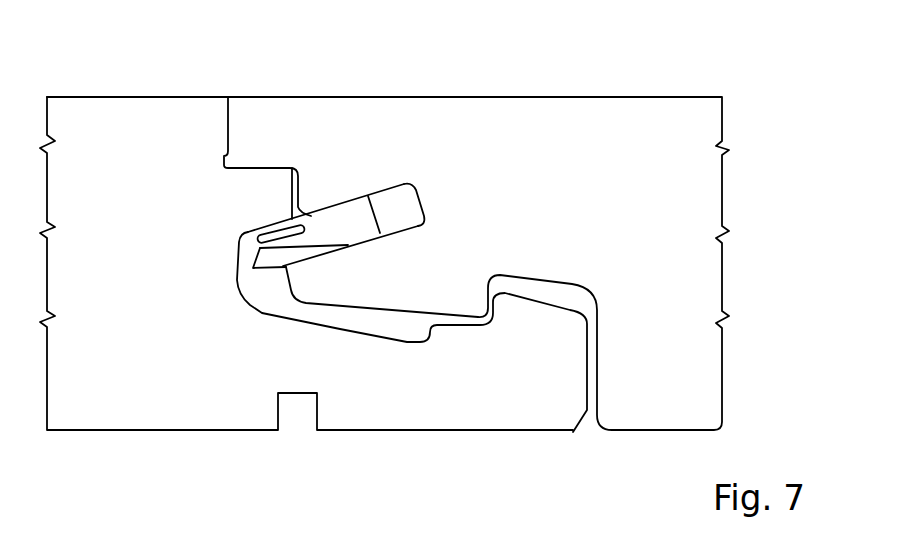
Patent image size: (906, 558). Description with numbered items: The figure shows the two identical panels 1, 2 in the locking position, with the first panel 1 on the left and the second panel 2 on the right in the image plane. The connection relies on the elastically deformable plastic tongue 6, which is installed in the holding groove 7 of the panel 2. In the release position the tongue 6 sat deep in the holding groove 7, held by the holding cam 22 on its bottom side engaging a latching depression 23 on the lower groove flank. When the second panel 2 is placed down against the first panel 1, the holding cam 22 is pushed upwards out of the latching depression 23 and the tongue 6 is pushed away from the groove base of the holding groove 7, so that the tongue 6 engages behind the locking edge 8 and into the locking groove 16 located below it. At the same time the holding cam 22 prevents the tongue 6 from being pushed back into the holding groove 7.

The panel 1 is at (120, 412).
The panel 2 is at (667, 112).
The tongue 6 is at (343, 207).
The holding groove 7 is at (412, 198).
The locking edge 8 is at (290, 217).
The locking groove 16 is at (250, 287).
The holding cam 22 is at (283, 268).
The latching depression 23 is at (318, 257).